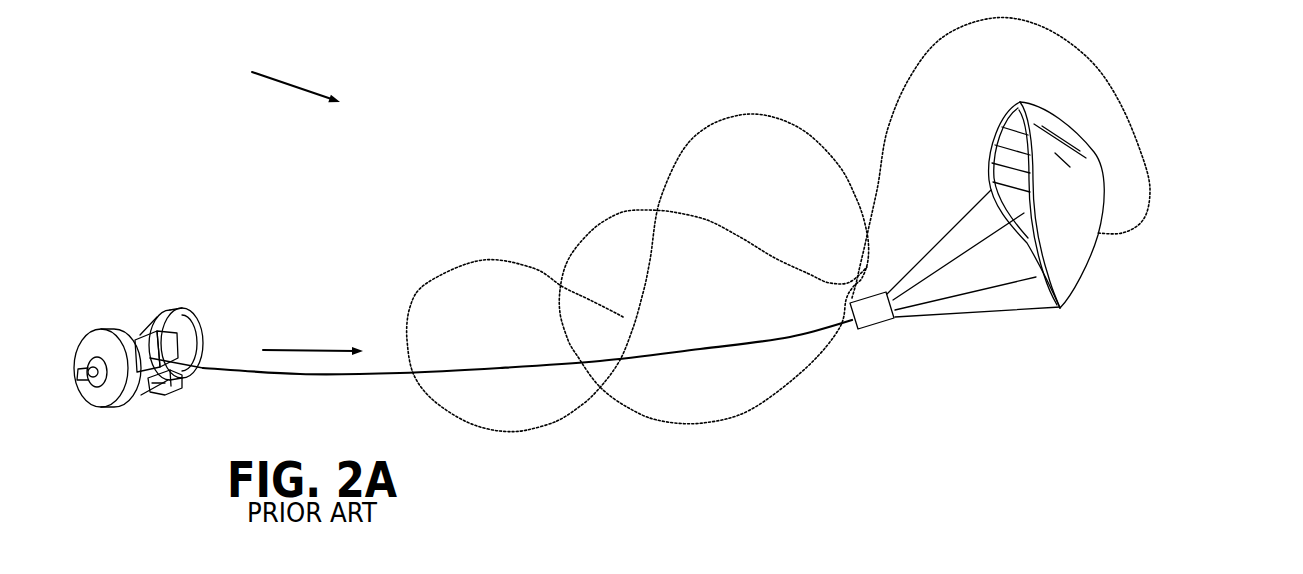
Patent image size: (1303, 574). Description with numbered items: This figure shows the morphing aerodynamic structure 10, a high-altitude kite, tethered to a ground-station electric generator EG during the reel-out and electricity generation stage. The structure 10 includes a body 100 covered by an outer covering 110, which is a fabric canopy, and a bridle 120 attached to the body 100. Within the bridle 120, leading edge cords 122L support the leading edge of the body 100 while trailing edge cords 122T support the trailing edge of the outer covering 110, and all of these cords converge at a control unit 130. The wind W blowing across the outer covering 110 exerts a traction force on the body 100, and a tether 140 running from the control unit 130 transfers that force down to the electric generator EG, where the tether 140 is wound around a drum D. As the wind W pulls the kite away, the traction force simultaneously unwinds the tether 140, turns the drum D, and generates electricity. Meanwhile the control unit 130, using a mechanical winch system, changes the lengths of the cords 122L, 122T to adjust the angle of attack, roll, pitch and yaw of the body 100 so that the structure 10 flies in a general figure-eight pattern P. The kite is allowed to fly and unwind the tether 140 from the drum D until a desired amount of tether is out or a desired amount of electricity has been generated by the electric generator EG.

The morphing aerodynamic structure 10 is at (1066, 245).
The body 100 is at (1092, 200).
The outer covering 110 is at (1082, 137).
The bridle 120 is at (991, 283).
The leading edge cords 122L is at (965, 213).
The trailing edge cords 122T is at (1017, 311).
The control unit 130 is at (877, 331).
The tether 140 is at (393, 374).
The ground-station electric generator EG is at (141, 333).
The drum D is at (181, 318).
The figure-eight pattern P is at (628, 210).
The wind W is at (296, 79).